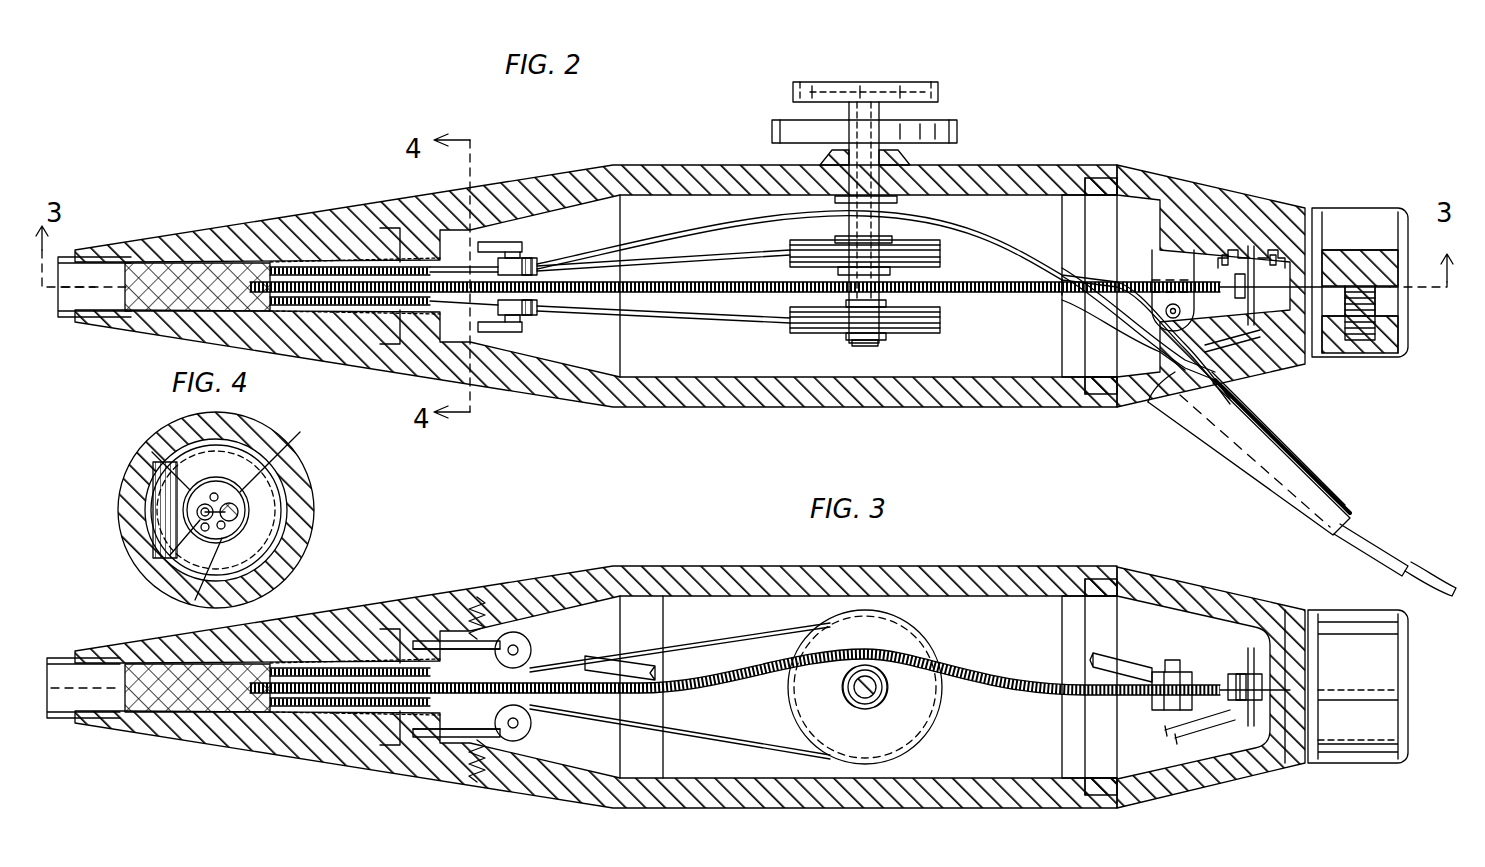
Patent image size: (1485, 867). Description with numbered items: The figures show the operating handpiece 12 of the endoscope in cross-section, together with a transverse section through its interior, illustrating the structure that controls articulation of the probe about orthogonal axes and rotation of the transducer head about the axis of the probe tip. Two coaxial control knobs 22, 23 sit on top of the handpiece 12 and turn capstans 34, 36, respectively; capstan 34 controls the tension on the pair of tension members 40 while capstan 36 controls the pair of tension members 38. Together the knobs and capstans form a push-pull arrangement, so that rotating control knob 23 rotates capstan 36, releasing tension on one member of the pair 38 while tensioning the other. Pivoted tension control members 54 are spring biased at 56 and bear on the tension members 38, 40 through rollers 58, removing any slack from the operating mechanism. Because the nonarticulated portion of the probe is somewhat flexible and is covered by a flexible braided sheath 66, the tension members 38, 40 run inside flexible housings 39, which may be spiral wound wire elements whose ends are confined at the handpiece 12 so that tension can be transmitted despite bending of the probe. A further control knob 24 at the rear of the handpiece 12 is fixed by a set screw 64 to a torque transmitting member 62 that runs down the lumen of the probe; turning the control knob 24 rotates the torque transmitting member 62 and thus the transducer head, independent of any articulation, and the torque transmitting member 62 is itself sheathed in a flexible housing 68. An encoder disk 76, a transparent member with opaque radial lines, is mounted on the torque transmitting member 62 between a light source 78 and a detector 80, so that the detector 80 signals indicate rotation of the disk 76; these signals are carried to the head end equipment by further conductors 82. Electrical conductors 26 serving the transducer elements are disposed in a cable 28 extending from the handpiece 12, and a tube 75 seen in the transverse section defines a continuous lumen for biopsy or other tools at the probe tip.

In FIG. 2, the handpiece 12 is at (1176, 164).
In FIG. 4, the handpiece 12 is at (322, 473).
In FIG. 2, the control knob 22 is at (935, 88).
In FIG. 2, the control knob 23 is at (957, 130).
In FIG. 2, the control knob 24 is at (1346, 208).
In FIG. 3, the control knob 24 is at (1352, 763).
In FIG. 2, the electrical conductors 26 is at (1412, 578).
In FIG. 4, the electrical conductors 26 is at (238, 510).
In FIG. 2, the cable 28 is at (1352, 540).
In FIG. 3, the cable 28 is at (636, 663).
In FIG. 2, the capstan 34 is at (940, 320).
In FIG. 2, the capstan 36 is at (940, 260).
In FIG. 3, the capstan 36 is at (922, 640).
In FIG. 2, the tension members 38 is at (585, 262).
In FIG. 4, the tension members 38 is at (152, 452).
In FIG. 3, the tension members 38 is at (592, 655).
In FIG. 2, the flexible housings 39 is at (300, 245).
In FIG. 3, the flexible housings 39 is at (305, 655).
In FIG. 2, the tension members 40 is at (650, 318).
In FIG. 4, the tension members 40 is at (255, 538).
In FIG. 2, the tension control members 54 is at (497, 242).
In FIG. 3, the tension control members 54 is at (437, 641).
In FIG. 3, the spring 56 is at (490, 600).
In FIG. 2, the rollers 58 is at (534, 258).
In FIG. 3, the rollers 58 is at (528, 642).
In FIG. 2, the torque transmitting member 62 is at (1280, 335).
In FIG. 4, the torque transmitting member 62 is at (197, 514).
In FIG. 3, the torque transmitting member 62 is at (1228, 735).
In FIG. 2, the set screw 64 is at (1375, 310).
In FIG. 2, the braided sheath 66 is at (210, 260).
In FIG. 2, the flexible housing 68 is at (1098, 275).
In FIG. 4, the flexible housing 68 is at (160, 570).
In FIG. 3, the flexible housing 68 is at (280, 732).
In FIG. 4, the tube 75 is at (206, 492).
In FIG. 2, the encoder disk 76 is at (1256, 325).
In FIG. 3, the encoder disk 76 is at (1246, 660).
In FIG. 2, the light source 78 is at (1222, 255).
In FIG. 2, the detector 80 is at (1274, 255).
In FIG. 2, the conductors 82 is at (1205, 348).
In FIG. 3, the conductors 82 is at (1218, 745).